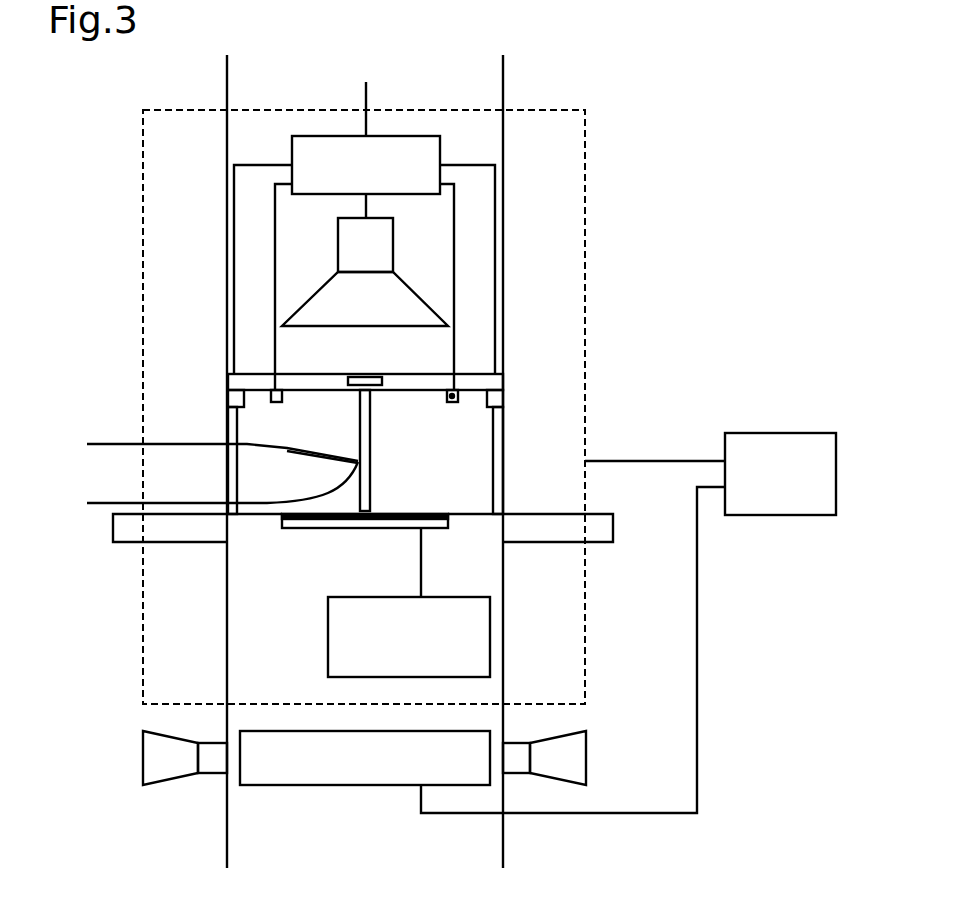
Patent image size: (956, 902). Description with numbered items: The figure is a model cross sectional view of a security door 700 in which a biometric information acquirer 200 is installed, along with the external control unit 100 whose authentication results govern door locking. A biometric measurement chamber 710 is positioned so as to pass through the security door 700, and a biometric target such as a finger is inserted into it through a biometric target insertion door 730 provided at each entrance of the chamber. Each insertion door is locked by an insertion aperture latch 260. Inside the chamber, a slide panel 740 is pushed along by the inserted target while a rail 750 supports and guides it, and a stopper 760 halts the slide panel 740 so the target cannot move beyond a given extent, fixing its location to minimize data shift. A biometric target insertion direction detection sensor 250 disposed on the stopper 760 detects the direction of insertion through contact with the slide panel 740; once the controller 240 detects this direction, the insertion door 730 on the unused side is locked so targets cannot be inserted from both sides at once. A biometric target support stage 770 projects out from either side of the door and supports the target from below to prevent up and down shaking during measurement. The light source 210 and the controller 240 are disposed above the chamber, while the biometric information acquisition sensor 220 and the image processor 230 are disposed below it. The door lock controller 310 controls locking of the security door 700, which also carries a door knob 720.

The control unit 100 is at (745, 433).
The biometric information acquirer 200 is at (585, 143).
The light source 210 is at (393, 255).
The biometric information acquisition sensor 220 is at (336, 530).
The image processor 230 is at (440, 597).
The controller 240 is at (440, 141).
The biometric target insertion direction detection sensor 250 is at (448, 397).
The insertion aperture latch 260 is at (497, 399).
The door lock controller 310 is at (283, 786).
The security door 700 is at (284, 101).
The biometric measurement chamber 710 is at (430, 483).
The door knob 720 is at (588, 740).
The biometric target insertion door 730 is at (228, 426).
The slide panel 740 is at (360, 418).
The rail 750 is at (402, 374).
The stopper 760 is at (455, 401).
The biometric target support stage 770 is at (530, 514).